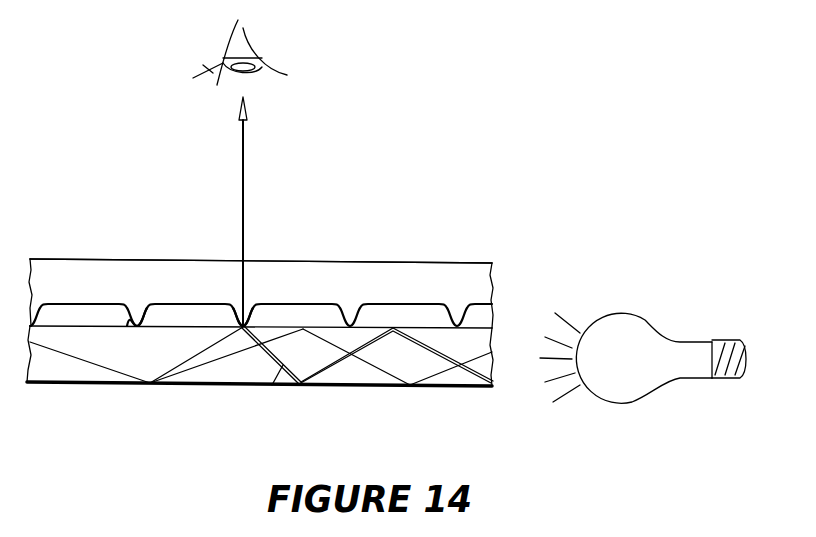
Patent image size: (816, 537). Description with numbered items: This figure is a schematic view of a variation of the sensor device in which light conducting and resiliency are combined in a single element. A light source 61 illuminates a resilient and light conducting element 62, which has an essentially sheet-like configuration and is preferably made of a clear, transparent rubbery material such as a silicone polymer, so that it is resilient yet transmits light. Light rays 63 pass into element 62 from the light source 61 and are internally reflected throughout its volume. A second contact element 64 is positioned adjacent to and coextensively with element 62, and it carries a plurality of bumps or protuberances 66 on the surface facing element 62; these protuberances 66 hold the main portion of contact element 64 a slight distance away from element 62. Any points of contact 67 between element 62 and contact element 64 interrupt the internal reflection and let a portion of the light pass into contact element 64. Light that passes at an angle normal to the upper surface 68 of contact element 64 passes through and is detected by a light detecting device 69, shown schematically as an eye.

The light source 61 is at (653, 322).
The resilient and light conducting element 62 is at (452, 377).
The light rays 63 is at (233, 354).
The contact element 64 is at (445, 277).
The protuberances 66 is at (277, 311).
The points of contact 67 is at (138, 324).
The upper surface 68 is at (97, 259).
The light detecting device 69 is at (263, 47).